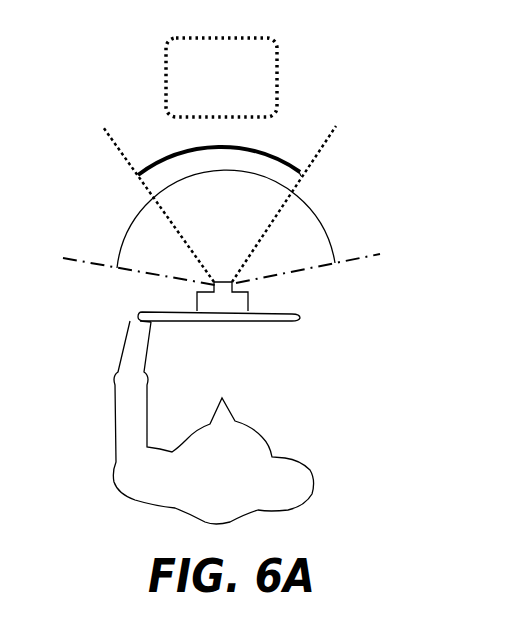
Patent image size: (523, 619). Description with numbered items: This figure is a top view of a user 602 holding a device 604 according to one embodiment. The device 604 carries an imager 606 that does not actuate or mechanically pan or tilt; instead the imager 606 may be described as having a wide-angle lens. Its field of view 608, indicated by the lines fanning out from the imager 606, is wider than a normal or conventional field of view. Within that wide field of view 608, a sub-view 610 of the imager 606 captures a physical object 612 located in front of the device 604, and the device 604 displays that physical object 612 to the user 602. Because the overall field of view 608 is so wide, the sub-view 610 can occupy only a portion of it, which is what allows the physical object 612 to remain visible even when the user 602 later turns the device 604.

The user 602 is at (315, 483).
The device 604 is at (300, 318).
The imager 606 is at (250, 297).
The field of view 608 is at (132, 238).
The sub-view 610 is at (152, 164).
The physical object 612 is at (243, 88).